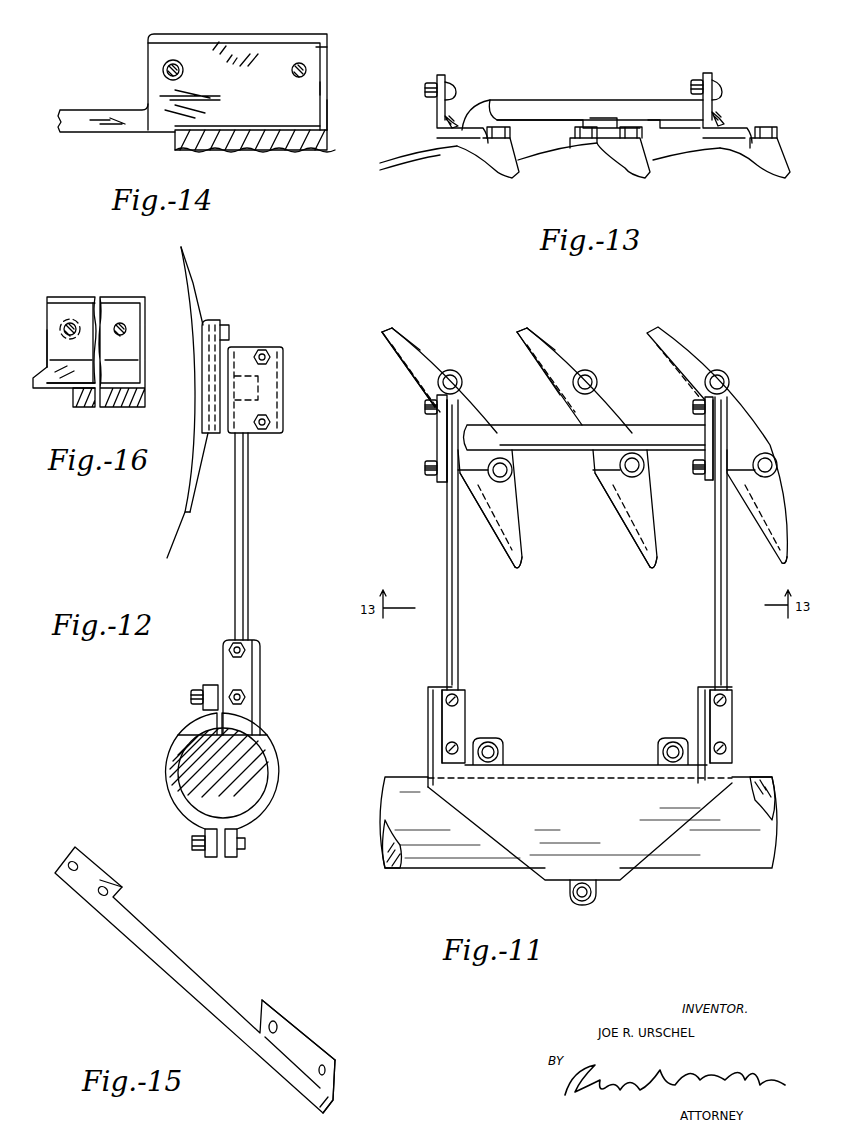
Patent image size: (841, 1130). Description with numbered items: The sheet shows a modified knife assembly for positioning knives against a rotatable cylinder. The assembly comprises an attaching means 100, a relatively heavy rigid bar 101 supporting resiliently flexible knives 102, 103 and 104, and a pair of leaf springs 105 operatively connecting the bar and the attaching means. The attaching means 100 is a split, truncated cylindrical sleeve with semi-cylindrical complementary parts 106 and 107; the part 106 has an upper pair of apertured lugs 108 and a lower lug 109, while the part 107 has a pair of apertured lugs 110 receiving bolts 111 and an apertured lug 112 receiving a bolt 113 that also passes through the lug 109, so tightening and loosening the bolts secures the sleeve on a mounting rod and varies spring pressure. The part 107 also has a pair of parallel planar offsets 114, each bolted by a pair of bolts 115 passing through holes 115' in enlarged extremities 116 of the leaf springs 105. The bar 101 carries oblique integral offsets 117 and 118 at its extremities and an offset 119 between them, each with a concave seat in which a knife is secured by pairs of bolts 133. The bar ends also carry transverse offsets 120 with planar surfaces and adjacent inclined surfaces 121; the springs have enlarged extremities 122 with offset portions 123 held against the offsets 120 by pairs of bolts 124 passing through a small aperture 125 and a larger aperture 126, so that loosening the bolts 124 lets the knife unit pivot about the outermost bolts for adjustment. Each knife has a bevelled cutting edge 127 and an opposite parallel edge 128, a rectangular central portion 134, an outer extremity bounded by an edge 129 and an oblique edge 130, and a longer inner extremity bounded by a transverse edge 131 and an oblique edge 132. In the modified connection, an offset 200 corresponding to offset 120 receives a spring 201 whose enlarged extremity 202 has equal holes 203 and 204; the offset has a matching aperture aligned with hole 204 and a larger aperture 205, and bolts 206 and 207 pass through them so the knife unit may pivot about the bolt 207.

In FIG. 12, the attaching means 100 is at (161, 754).
In FIG. 11, the attaching means 100 is at (618, 752).
In FIG. 13, the rigid bar 101 is at (585, 105).
In FIG. 12, the rigid bar 101 is at (284, 381).
In FIG. 11, the rigid bar 101 is at (545, 438).
In FIG. 13, the knife 102 is at (488, 157).
In FIG. 12, the knife 102 is at (198, 302).
In FIG. 11, the knife 102 is at (415, 352).
In FIG. 13, the knife 103 is at (623, 157).
In FIG. 11, the knife 103 is at (550, 352).
In FIG. 13, the knife 104 is at (758, 162).
In FIG. 11, the knife 104 is at (680, 352).
In FIG. 14, the leaf spring 105 is at (100, 112).
In FIG. 13, the leaf spring 105 is at (460, 112).
In FIG. 12, the leaf spring 105 is at (250, 508).
In FIG. 15, the leaf spring 105 is at (160, 958).
In FIG. 11, the leaf spring 105 is at (447, 562).
In FIG. 12, the semi-cylindrical part 106 is at (173, 800).
In FIG. 12, the semi-cylindrical part 107 is at (272, 797).
In FIG. 11, the semi-cylindrical part 107 is at (635, 860).
In FIG. 12, the upper lug 108 is at (205, 686).
In FIG. 12, the lower lug 109 is at (212, 858).
In FIG. 11, the apertured lug 110 is at (504, 751).
In FIG. 12, the bolt 111 is at (191, 697).
In FIG. 11, the bolt 111 is at (496, 740).
In FIG. 12, the apertured lug 112 is at (230, 858).
In FIG. 11, the apertured lug 112 is at (585, 905).
In FIG. 12, the bolt 113 is at (246, 841).
In FIG. 11, the bolt 113 is at (592, 896).
In FIG. 12, the planar integral offset 114 is at (226, 668).
In FIG. 11, the planar integral offset 114 is at (462, 714).
In FIG. 12, the bolt 115 is at (236, 669).
In FIG. 11, the bolt 115 is at (605, 717).
In FIG. 15, the hole 115' is at (110, 870).
In FIG. 15, the enlarged extremity 116 is at (100, 874).
In FIG. 11, the enlarged extremity 116 is at (723, 730).
In FIG. 11, the integral offset 117 is at (466, 400).
In FIG. 11, the integral offset 118 is at (738, 412).
In FIG. 11, the offset 119 is at (601, 400).
In FIG. 14, the transverse offset 120 is at (320, 36).
In FIG. 13, the transverse offset 120 is at (441, 72).
In FIG. 11, the transverse offset 120 is at (440, 441).
In FIG. 13, the inclined surface 121 is at (443, 120).
In FIG. 14, the enlarged extremity 122 is at (312, 108).
In FIG. 15, the enlarged extremity 122 is at (335, 1098).
In FIG. 11, the enlarged extremity 122 is at (445, 456).
In FIG. 14, the offset portion 123 is at (310, 52).
In FIG. 13, the offset portion 123 is at (450, 80).
In FIG. 15, the offset portion 123 is at (300, 1042).
In FIG. 14, the bolt 124 is at (166, 72).
In FIG. 13, the bolt 124 is at (424, 92).
In FIG. 11, the bolt 124 is at (425, 413).
In FIG. 14, the small aperture 125 is at (308, 75).
In FIG. 15, the small aperture 125 is at (330, 1072).
In FIG. 14, the larger aperture 126 is at (166, 62).
In FIG. 15, the larger aperture 126 is at (278, 1022).
In FIG. 13, the bevelled cutting edge 127 is at (455, 150).
In FIG. 11, the bevelled cutting edge 127 is at (397, 380).
In FIG. 11, the opposite parallel edge 128 is at (476, 414).
In FIG. 11, the edge 129 is at (384, 331).
In FIG. 11, the edge 130 is at (406, 338).
In FIG. 12, the transverse edge 131 is at (186, 516).
In FIG. 11, the transverse edge 131 is at (520, 568).
In FIG. 11, the edge 132 is at (517, 528).
In FIG. 13, the bolt 133 is at (575, 133).
In FIG. 11, the bolt 133 is at (462, 378).
In FIG. 11, the rectangular central portion 134 is at (560, 413).
In FIG. 16, the offset 200 is at (62, 297).
In FIG. 16, the spring 201 is at (33, 382).
In FIG. 16, the enlarged extremity 202 is at (52, 343).
In FIG. 16, the hole 203 is at (88, 302).
In FIG. 16, the hole 204 is at (122, 302).
In FIG. 16, the aperture 205 is at (65, 320).
In FIG. 16, the bolt 206 is at (63, 326).
In FIG. 16, the bolt 207 is at (126, 333).